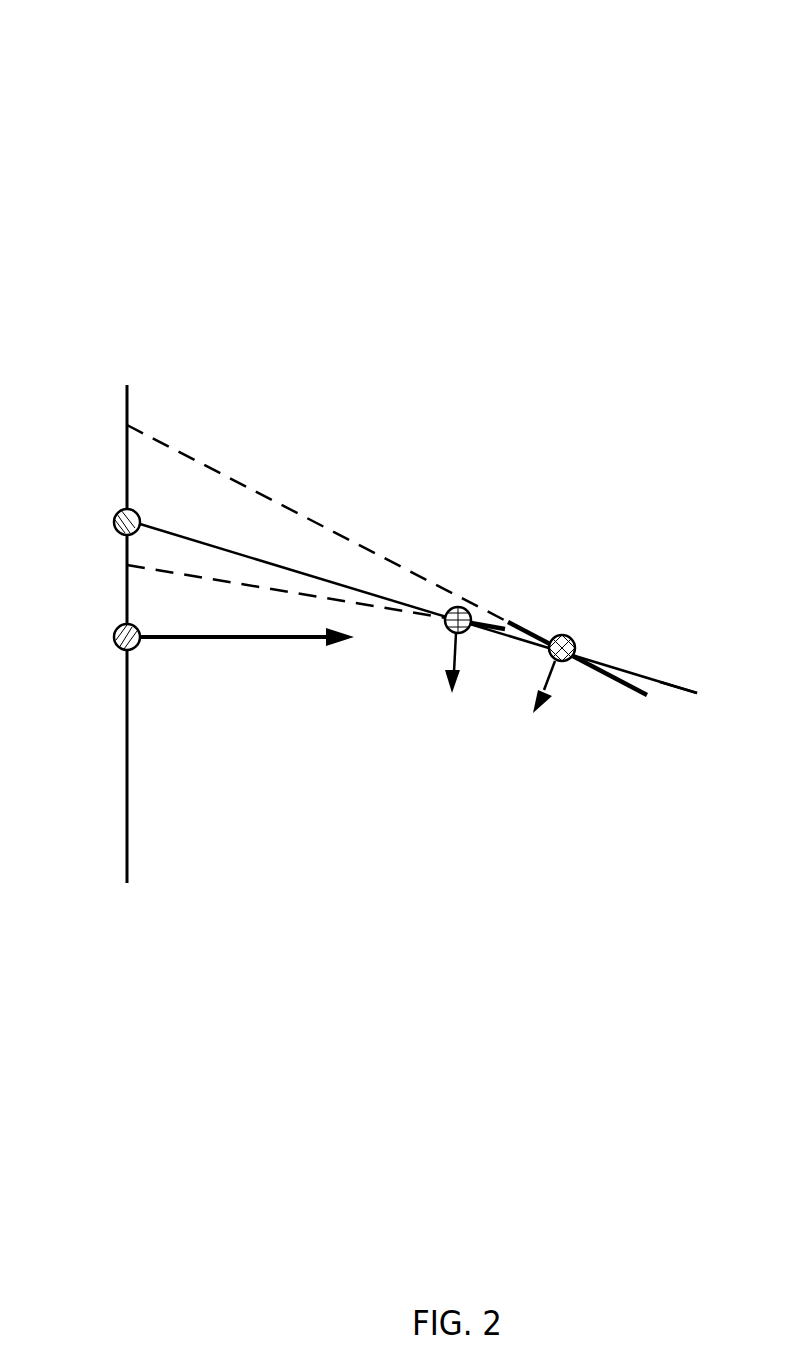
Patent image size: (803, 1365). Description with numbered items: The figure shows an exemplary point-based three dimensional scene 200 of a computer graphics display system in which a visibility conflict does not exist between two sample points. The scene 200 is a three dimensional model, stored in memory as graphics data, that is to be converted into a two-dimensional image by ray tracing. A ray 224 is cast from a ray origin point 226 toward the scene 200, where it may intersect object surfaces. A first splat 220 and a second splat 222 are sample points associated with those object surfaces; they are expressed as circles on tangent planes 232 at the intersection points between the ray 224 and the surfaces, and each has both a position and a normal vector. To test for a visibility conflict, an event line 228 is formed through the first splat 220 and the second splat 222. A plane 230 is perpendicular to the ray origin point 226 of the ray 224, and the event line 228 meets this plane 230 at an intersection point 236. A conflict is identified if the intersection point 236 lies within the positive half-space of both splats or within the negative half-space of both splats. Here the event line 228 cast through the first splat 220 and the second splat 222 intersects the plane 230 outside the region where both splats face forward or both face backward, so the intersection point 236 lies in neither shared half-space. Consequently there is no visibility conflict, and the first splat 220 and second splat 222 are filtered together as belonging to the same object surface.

The point-based three dimensional scene 200 is at (113, 100).
The first splat 220 is at (562, 635).
The second splat 222 is at (458, 607).
The ray 224 is at (247, 640).
The ray origin point 226 is at (114, 640).
The event line 228 is at (697, 694).
The plane 230 is at (126, 400).
The tangent planes 232 is at (637, 692).
The intersection point 236 is at (140, 510).